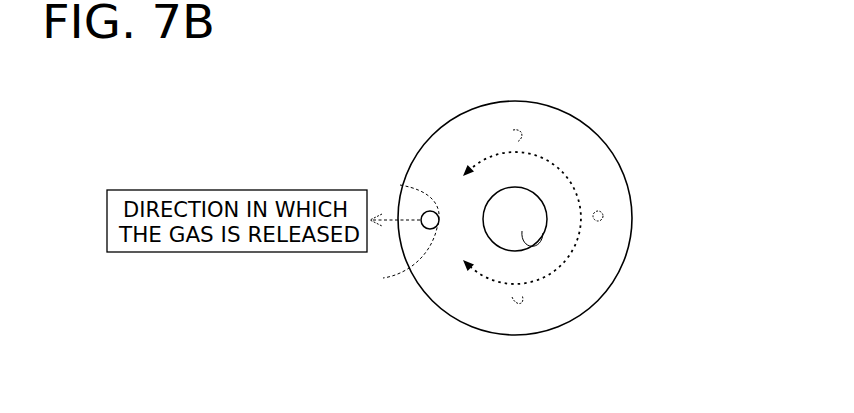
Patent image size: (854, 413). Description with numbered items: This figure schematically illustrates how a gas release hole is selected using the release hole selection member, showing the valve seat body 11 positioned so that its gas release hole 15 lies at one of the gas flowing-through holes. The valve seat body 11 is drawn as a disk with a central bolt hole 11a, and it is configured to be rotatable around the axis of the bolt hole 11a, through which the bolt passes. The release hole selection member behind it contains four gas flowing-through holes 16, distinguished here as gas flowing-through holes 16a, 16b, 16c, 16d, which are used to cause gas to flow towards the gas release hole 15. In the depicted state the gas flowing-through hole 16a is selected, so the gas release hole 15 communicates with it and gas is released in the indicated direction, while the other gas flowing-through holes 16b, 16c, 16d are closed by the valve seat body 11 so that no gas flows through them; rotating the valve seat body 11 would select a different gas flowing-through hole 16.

The valve seat body 11 is at (612, 138).
The bolt hole 11a is at (541, 238).
The gas release hole 15 is at (400, 185).
The gas flowing-through hole 16 is at (522, 218).
The gas flowing-through hole 16a is at (392, 276).
The gas flowing-through hole 16b is at (590, 216).
The gas flowing-through hole 16c is at (518, 130).
The gas flowing-through hole 16d is at (518, 292).